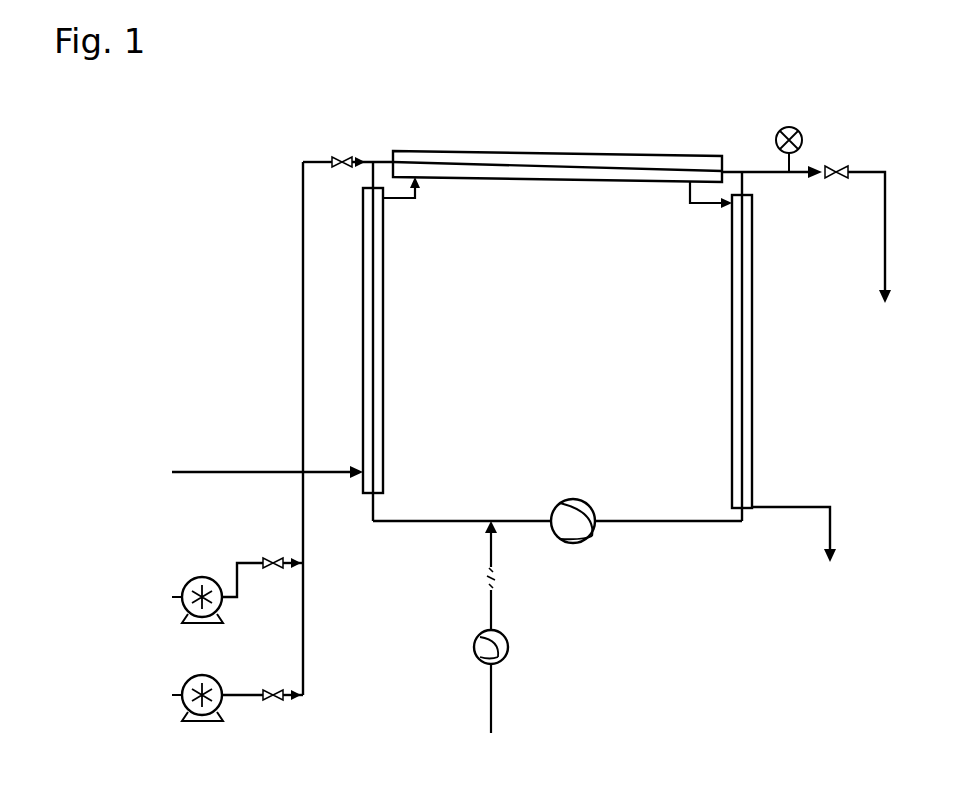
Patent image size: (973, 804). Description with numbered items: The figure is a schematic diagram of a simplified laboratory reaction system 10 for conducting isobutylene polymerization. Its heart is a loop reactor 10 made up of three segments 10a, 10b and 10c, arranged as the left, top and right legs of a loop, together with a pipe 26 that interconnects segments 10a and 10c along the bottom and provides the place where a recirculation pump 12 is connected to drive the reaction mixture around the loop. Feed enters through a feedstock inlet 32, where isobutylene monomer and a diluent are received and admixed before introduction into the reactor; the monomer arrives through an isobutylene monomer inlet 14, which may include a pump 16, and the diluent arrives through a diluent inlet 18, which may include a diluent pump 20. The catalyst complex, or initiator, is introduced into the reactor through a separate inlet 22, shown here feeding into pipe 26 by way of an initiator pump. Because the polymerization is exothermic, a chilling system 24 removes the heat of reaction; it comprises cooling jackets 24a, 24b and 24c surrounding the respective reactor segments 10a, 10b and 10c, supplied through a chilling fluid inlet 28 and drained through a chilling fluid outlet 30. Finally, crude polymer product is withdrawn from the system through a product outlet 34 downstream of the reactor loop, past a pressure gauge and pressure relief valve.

The loop reactor 10 is at (495, 120).
The reactor segment 10a is at (373, 298).
The reactor segment 10b is at (585, 173).
The reactor segment 10c is at (742, 332).
The recirculation pump 12 is at (607, 470).
The isobutylene monomer inlet 14 is at (250, 698).
The pump 16 is at (203, 675).
The diluent inlet 18 is at (252, 562).
The diluent pump 20 is at (203, 577).
The inlet for the catalyst complex 22 is at (492, 603).
The chilling system 24 is at (784, 416).
The cooling jacket 24a is at (385, 380).
The cooling jacket 24b is at (485, 177).
The cooling jacket 24c is at (735, 296).
The pipe 26 is at (683, 523).
The chilling fluid inlet 28 is at (270, 470).
The chilling fluid outlet 30 is at (832, 525).
The feedstock inlet 32 is at (303, 282).
The product outlet 34 is at (887, 250).